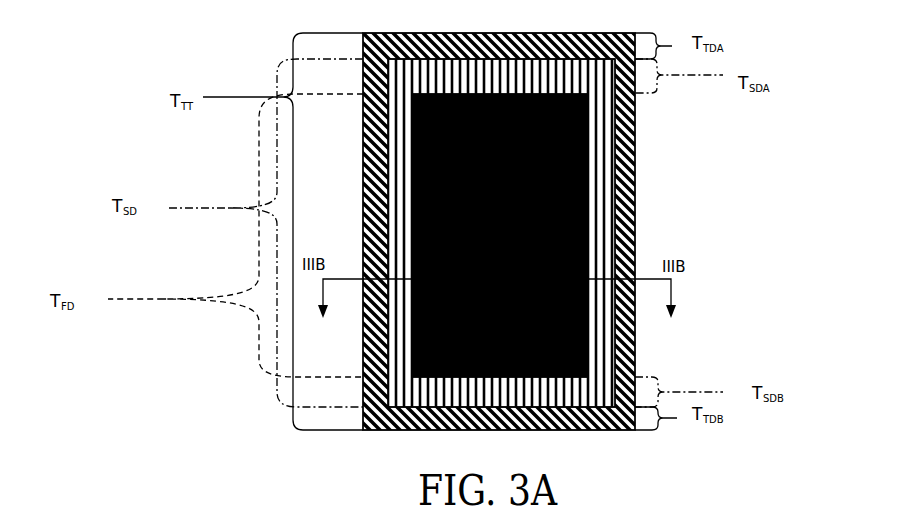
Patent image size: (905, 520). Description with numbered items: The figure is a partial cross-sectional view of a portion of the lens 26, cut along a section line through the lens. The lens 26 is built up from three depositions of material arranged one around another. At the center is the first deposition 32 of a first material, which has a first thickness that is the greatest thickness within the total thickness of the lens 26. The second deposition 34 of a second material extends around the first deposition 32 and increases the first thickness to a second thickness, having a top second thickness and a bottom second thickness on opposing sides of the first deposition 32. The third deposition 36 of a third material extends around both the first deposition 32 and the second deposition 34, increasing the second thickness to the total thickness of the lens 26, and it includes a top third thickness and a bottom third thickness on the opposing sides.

The lens 26 is at (136, 120).
The first deposition 32 is at (587, 363).
The second deposition 34 is at (600, 227).
The third deposition 36 is at (627, 165).